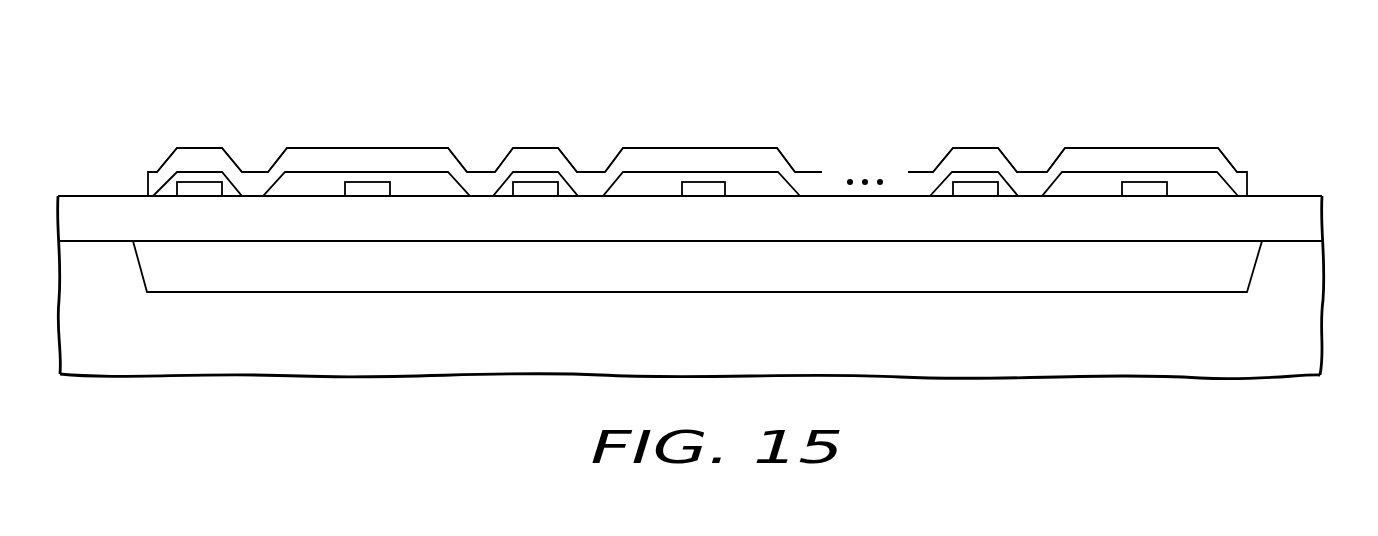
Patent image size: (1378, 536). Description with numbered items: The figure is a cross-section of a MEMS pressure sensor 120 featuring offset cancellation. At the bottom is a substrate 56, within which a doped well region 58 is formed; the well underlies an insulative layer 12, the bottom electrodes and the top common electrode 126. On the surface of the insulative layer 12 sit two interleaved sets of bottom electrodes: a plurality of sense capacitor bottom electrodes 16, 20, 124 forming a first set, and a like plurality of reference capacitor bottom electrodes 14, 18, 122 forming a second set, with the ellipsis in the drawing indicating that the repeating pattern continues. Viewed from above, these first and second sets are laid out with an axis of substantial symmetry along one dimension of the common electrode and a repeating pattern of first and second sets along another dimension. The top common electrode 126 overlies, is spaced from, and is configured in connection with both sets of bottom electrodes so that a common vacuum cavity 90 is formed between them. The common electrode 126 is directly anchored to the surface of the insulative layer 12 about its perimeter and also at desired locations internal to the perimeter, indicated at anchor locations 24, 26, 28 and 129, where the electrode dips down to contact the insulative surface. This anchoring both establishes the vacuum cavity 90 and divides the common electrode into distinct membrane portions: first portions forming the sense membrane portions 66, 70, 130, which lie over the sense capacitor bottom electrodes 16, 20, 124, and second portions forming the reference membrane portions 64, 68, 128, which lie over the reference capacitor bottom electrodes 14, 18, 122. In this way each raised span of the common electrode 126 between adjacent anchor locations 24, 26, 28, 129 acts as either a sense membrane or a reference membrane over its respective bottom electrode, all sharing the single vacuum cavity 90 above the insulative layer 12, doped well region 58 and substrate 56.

The insulative layer 12 is at (1275, 233).
The reference capacitor bottom electrode 14 is at (202, 197).
The sense capacitor bottom electrode 16 is at (372, 197).
The reference capacitor bottom electrode 18 is at (539, 197).
The sense capacitor bottom electrode 20 is at (709, 197).
The anchor location 24 is at (259, 159).
The anchor location 26 is at (479, 159).
The anchor location 28 is at (596, 159).
The substrate 56 is at (718, 343).
The doped well region 58 is at (792, 285).
The reference membrane portion 64 is at (198, 130).
The sense membrane portion 66 is at (368, 130).
The reference membrane portion 68 is at (537, 130).
The sense membrane portion 70 is at (705, 130).
The common vacuum cavity 90 is at (168, 197).
The MEMS pressure sensor 120 is at (1297, 67).
The reference capacitor bottom electrode 122 is at (986, 197).
The sense capacitor bottom electrode 124 is at (1147, 197).
The common electrode 126 is at (1177, 138).
The reference membrane portion 128 is at (975, 130).
The anchor location 129 is at (1036, 159).
The sense membrane portion 130 is at (1143, 130).